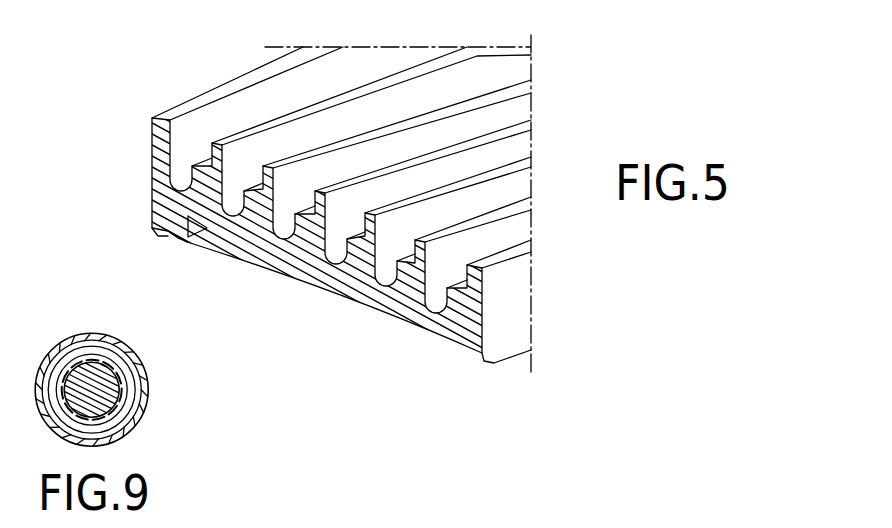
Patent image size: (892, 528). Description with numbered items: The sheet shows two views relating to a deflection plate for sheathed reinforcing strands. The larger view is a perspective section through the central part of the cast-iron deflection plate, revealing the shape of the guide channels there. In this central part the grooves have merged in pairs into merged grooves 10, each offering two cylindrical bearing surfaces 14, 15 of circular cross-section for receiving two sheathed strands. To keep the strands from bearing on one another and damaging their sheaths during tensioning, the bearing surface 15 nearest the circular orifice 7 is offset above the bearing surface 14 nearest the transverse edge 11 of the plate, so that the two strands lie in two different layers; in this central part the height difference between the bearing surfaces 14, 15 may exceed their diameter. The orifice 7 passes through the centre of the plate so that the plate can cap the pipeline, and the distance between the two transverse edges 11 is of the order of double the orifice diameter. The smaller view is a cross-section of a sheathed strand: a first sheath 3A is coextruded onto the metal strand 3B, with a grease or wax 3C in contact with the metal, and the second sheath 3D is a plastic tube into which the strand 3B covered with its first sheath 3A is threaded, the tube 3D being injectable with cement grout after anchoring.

In FIG. 5, the transverse edge 11 is at (208, 92).
In FIG. 5, the bearing surface 14 is at (229, 219).
In FIG. 5, the bearing surface 15 is at (303, 215).
In FIG. 5, the merged groove 10 is at (339, 262).
In FIG. 5, the circular orifice 7 is at (498, 312).
In FIG. 9, the first sheath 3A is at (127, 368).
In FIG. 9, the metal strand 3B is at (92, 367).
In FIG. 9, the grease or wax 3C is at (118, 390).
In FIG. 9, the second sheath 3D is at (127, 425).